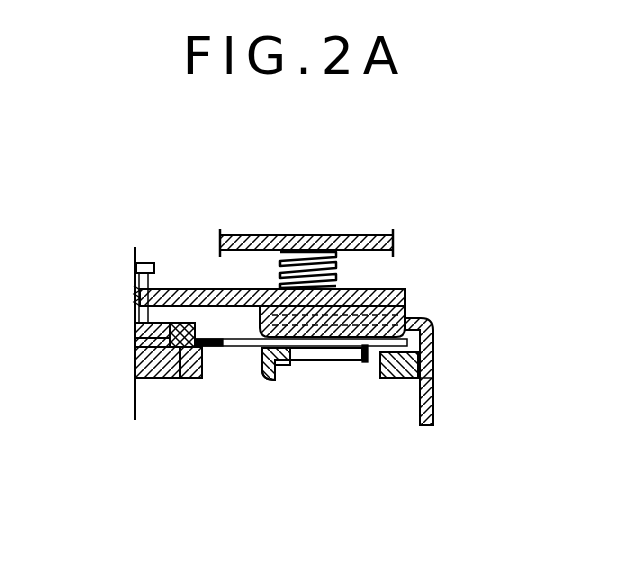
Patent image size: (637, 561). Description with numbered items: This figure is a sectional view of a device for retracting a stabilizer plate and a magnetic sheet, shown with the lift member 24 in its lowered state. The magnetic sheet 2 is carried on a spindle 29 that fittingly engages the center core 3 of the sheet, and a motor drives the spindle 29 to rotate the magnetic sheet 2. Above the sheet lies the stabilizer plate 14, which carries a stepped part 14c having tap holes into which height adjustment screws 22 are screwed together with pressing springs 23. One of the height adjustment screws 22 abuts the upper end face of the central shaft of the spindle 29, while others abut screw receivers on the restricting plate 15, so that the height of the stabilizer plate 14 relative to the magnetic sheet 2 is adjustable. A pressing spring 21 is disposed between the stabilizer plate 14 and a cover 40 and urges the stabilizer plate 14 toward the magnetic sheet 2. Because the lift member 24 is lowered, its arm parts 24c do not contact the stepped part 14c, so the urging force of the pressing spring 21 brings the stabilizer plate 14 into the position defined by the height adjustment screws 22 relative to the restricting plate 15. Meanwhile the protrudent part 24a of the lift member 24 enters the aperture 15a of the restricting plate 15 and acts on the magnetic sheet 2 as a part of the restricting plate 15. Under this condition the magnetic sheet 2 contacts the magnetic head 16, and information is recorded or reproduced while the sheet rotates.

The magnetic sheet 2 is at (232, 348).
The center core 3 is at (183, 378).
The stabilizer plate 14 is at (200, 288).
The stepped part 14c is at (405, 296).
The restricting plate 15 is at (268, 380).
The aperture 15a is at (340, 356).
The magnetic head 16 is at (357, 362).
The pressing spring 21 is at (342, 272).
The height adjustment screw 22 is at (138, 281).
The pressing spring 23 is at (150, 285).
The lift member 24 is at (433, 331).
The protrudent part 24a is at (400, 380).
The arm part 24c is at (322, 358).
The spindle 29 is at (135, 339).
The cover 40 is at (313, 236).